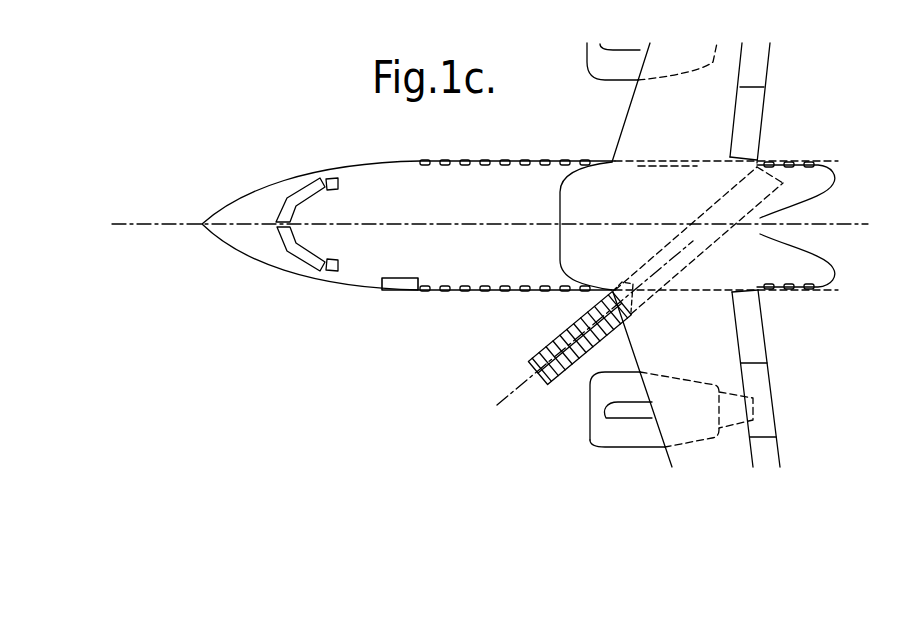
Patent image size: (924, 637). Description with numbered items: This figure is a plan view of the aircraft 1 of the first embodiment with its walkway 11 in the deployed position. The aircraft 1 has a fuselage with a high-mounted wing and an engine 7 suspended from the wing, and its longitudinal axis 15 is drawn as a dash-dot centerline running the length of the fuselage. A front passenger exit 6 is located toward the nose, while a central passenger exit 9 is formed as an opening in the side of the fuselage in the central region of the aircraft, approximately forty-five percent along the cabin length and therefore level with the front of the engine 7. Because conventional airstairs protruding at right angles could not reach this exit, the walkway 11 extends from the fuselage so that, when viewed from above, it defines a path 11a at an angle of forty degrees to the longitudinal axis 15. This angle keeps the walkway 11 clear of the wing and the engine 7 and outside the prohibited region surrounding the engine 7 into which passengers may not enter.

The aircraft 1 is at (226, 297).
The front passenger exit 6 is at (398, 283).
The engine 7 is at (621, 455).
The central passenger exit 9 is at (670, 258).
The walkway 11 is at (565, 313).
The path 11a is at (513, 402).
The longitudinal axis 15 is at (140, 218).